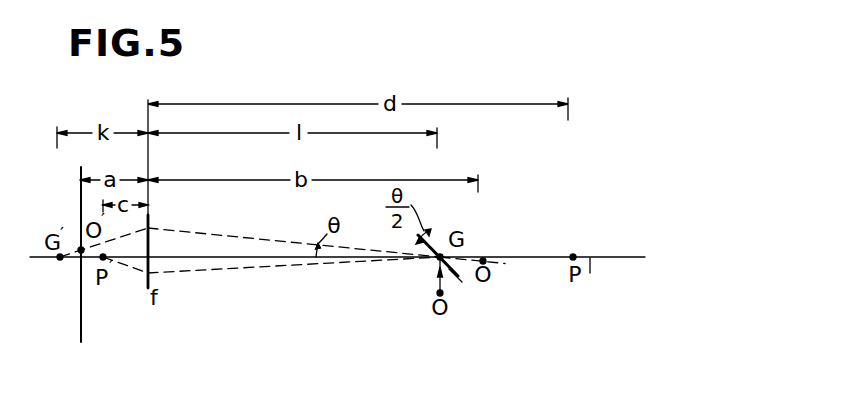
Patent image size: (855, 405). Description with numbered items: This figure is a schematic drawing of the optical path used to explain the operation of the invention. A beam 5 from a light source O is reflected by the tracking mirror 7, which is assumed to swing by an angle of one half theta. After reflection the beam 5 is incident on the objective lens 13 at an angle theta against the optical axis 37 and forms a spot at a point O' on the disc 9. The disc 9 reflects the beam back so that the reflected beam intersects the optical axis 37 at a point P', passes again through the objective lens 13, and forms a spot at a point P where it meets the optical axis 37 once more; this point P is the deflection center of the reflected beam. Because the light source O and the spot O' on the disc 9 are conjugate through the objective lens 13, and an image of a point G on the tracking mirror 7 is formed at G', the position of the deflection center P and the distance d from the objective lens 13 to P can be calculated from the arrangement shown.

The beam 5 is at (435, 287).
The tracking mirror 7 is at (455, 277).
The disc 9 is at (81, 317).
The objective lens 13 is at (149, 283).
The optical axis 37 is at (591, 274).